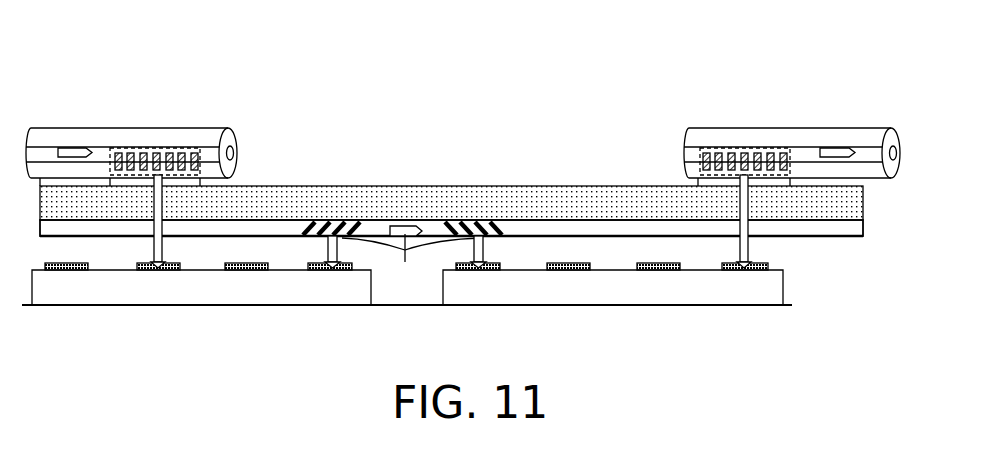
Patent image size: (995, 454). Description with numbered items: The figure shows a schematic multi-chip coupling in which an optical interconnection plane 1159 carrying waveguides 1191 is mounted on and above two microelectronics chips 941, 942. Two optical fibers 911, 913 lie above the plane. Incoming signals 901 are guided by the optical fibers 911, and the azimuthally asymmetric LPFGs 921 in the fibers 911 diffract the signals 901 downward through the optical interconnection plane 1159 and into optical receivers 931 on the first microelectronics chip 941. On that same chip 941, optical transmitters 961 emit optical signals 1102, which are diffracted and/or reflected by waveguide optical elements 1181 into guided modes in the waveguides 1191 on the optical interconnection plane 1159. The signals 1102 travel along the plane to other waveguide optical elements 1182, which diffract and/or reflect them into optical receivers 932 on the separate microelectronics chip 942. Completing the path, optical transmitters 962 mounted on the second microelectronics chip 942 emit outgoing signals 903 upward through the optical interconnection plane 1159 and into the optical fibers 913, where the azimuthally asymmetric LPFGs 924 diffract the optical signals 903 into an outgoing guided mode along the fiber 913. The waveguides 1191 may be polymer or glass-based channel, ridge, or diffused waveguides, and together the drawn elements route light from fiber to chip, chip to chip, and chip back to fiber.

The incoming signals 901 is at (155, 238).
The outgoing signals 903 is at (750, 242).
The optical fibers 911 is at (126, 137).
The optical fibers 913 is at (805, 137).
The azimuthally asymmetric LPFGs 921 is at (157, 148).
The azimuthally asymmetric LPFGs 924 is at (745, 150).
The optical receivers 931 is at (187, 271).
The optical receivers 932 is at (503, 271).
The microelectronics chip 941 is at (201, 287).
The microelectronics chip 942 is at (613, 287).
The optical transmitters 961 is at (304, 271).
The optical transmitters 962 is at (722, 271).
The optical signals 1102 is at (412, 258).
The optical interconnection plane 1159 is at (451, 211).
The waveguide optical elements 1181 is at (335, 222).
The waveguide optical elements 1182 is at (472, 222).
The waveguides 1191 is at (380, 225).